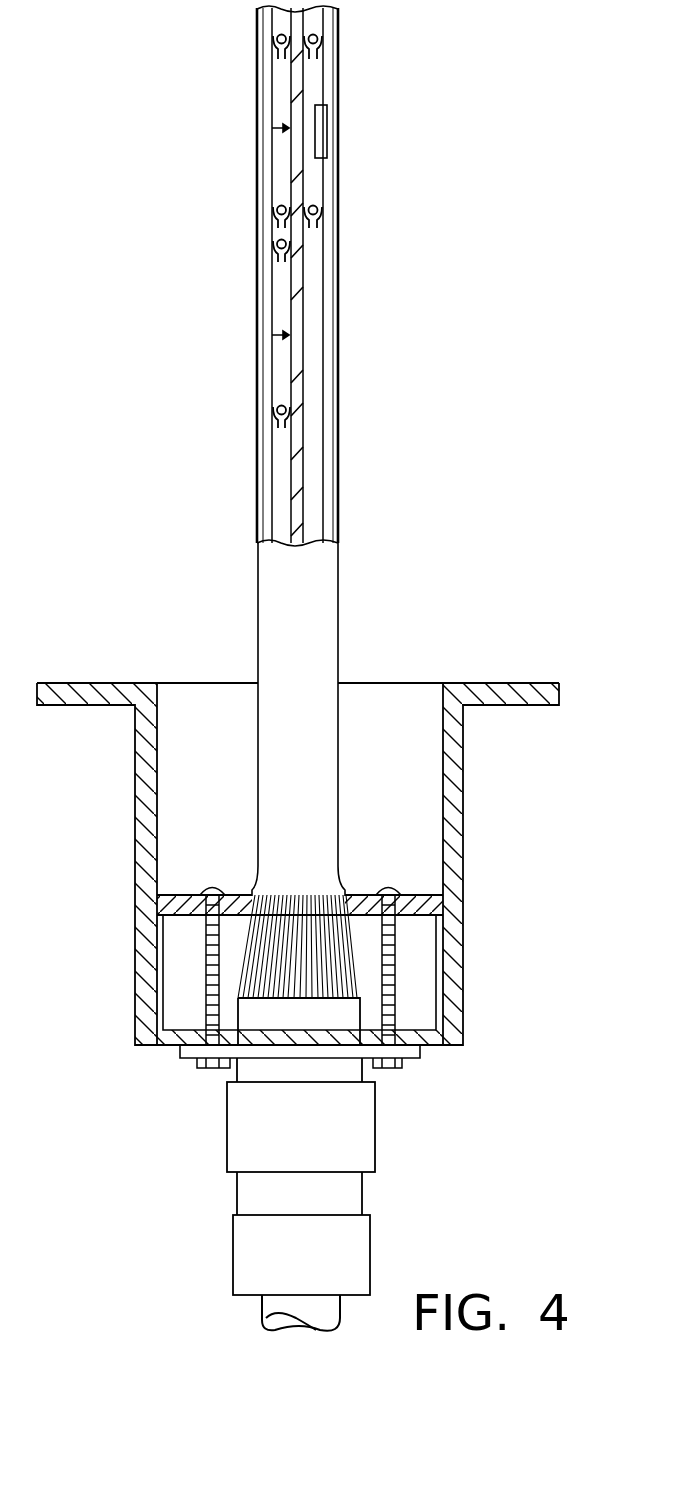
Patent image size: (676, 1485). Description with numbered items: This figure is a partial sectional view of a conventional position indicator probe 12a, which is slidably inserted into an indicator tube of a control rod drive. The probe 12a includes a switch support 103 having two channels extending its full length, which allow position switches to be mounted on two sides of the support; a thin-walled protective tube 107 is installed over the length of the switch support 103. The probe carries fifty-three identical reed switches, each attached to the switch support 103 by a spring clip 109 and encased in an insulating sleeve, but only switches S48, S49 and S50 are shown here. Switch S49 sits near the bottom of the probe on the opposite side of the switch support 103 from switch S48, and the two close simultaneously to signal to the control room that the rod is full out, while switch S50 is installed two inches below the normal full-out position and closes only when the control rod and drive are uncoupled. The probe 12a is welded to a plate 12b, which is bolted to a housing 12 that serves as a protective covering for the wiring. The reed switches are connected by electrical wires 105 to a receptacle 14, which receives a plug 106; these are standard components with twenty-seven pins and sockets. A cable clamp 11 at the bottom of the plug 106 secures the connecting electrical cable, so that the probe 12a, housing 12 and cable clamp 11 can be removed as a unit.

The reed switch S49 is at (283, 103).
The reed switch S48 is at (313, 183).
The reed switch S50 is at (281, 305).
The protective tube 107 is at (338, 298).
The switch support 103 is at (298, 465).
The spring clip 109 is at (320, 135).
The position indicator probe 12a is at (340, 609).
The housing 12 is at (453, 750).
The plate 12b is at (167, 900).
The electrical wires 105 is at (352, 948).
The receptacle 14 is at (250, 1018).
The plug 106 is at (237, 1120).
The cable clamp 11 is at (246, 1248).